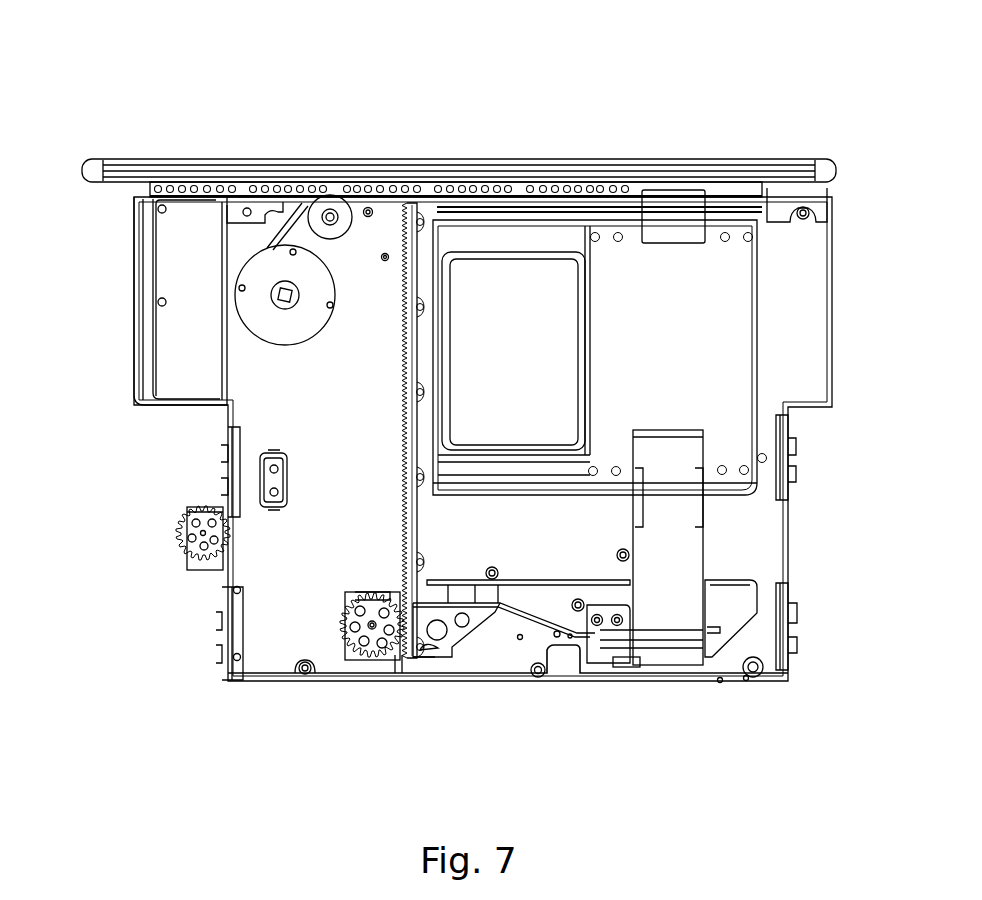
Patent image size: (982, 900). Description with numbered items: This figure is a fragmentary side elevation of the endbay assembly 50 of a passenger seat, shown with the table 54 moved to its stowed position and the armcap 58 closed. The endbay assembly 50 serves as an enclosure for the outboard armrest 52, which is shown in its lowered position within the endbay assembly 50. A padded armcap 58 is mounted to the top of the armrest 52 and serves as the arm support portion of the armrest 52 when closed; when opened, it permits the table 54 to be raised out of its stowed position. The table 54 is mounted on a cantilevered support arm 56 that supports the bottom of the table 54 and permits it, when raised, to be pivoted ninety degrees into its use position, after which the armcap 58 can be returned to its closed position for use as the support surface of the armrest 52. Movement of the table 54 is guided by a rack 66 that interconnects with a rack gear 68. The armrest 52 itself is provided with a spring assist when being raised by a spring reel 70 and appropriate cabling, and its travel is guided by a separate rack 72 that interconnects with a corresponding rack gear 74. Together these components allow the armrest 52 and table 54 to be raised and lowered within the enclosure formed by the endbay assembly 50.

The endbay assembly 50 is at (112, 126).
The outboard armrest 52 is at (74, 322).
The table 54 is at (641, 305).
The cantilevered support arm 56 is at (682, 558).
The padded armcap 58 is at (172, 168).
The rack 66 is at (400, 567).
The rack gear 68 is at (377, 655).
The spring reel 70 is at (253, 313).
The rack 72 is at (222, 590).
The rack gear 74 is at (180, 540).